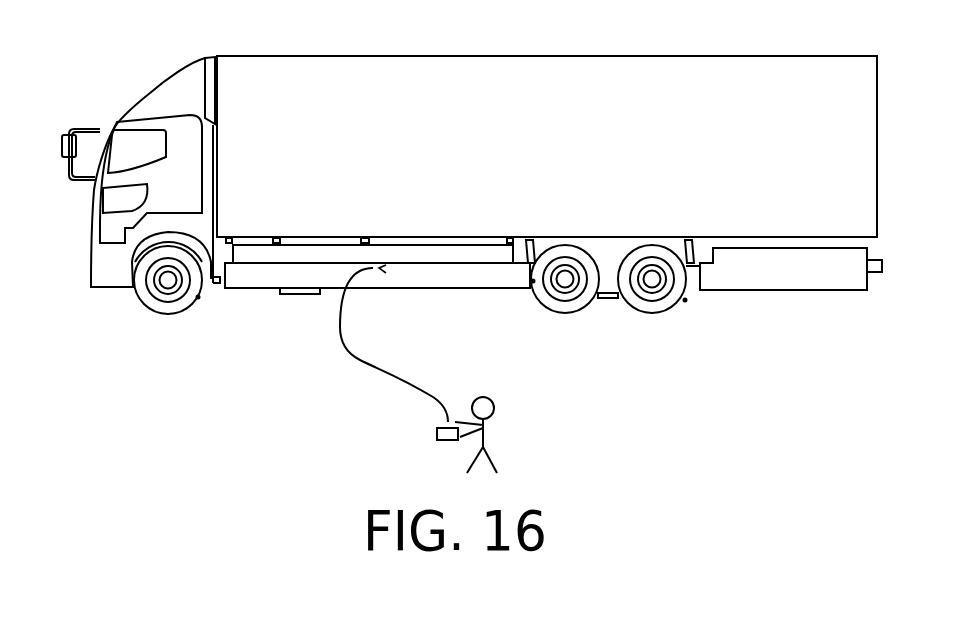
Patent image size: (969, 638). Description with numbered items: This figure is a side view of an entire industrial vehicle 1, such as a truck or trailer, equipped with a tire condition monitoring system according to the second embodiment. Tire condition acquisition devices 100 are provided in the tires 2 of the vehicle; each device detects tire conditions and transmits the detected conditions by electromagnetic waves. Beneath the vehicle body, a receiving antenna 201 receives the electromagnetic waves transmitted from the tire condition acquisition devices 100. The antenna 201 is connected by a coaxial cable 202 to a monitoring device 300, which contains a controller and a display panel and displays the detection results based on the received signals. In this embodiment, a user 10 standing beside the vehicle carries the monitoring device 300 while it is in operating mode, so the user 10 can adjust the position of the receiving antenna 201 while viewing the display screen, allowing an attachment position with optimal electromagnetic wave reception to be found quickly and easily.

The industrial vehicle 1 is at (475, 56).
The tire 2 is at (168, 313).
The tire condition acquisition device 100 is at (198, 297).
The antenna 201 is at (381, 271).
The coaxial cable 202 is at (363, 362).
The user 10 is at (495, 398).
The monitoring device 300 is at (437, 437).